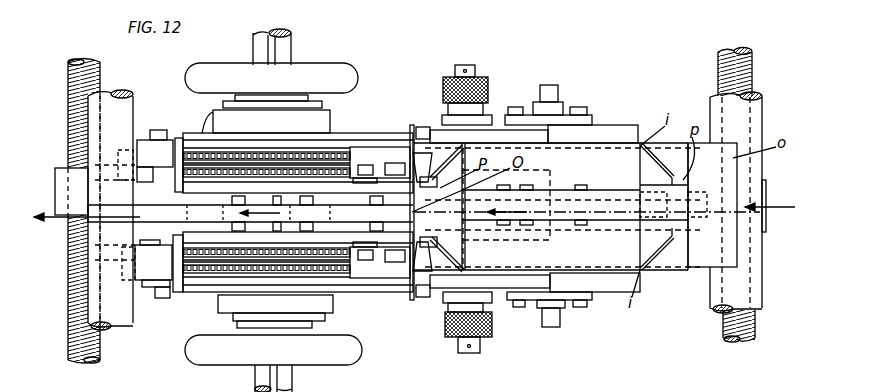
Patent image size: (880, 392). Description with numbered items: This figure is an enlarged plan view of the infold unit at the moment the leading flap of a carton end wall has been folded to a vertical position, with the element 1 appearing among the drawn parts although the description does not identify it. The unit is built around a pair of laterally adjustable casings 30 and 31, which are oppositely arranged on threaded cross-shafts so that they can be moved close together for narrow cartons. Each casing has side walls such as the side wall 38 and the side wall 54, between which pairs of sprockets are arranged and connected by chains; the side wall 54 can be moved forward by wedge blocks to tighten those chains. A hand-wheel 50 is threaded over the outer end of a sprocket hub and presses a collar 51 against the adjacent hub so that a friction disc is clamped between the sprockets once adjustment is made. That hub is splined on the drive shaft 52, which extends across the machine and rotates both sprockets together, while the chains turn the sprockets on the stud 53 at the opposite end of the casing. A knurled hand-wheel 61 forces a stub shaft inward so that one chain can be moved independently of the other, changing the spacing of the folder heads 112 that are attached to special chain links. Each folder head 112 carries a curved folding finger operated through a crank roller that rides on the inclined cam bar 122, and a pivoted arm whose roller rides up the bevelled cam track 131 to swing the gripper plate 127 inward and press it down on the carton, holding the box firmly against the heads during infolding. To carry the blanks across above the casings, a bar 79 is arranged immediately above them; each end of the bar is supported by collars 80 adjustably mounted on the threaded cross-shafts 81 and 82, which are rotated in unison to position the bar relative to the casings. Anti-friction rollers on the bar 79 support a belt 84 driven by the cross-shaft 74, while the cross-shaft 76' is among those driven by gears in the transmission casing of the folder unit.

The frame 1 is at (607, 218).
The casing 30 is at (328, 308).
The casing 31 is at (323, 118).
The side wall 38 is at (210, 137).
The hand-wheel 50 is at (313, 68).
The collar 51 is at (323, 107).
The drive shaft 52 is at (288, 40).
The stud 53 is at (548, 88).
The side wall 54 is at (618, 133).
The knurled hand-wheel 61 is at (482, 78).
The cross-shaft 74 is at (110, 100).
The cross-shaft 76' is at (751, 202).
The bar 79 is at (153, 207).
The collar 80 is at (63, 172).
The cross-shaft 81 is at (752, 68).
The cross-shaft 82 is at (75, 85).
The belt 84 is at (120, 221).
The folder head 112 is at (142, 153).
The cam bar 122 is at (538, 130).
The gripper plate 127 is at (423, 132).
The cam track 131 is at (488, 138).